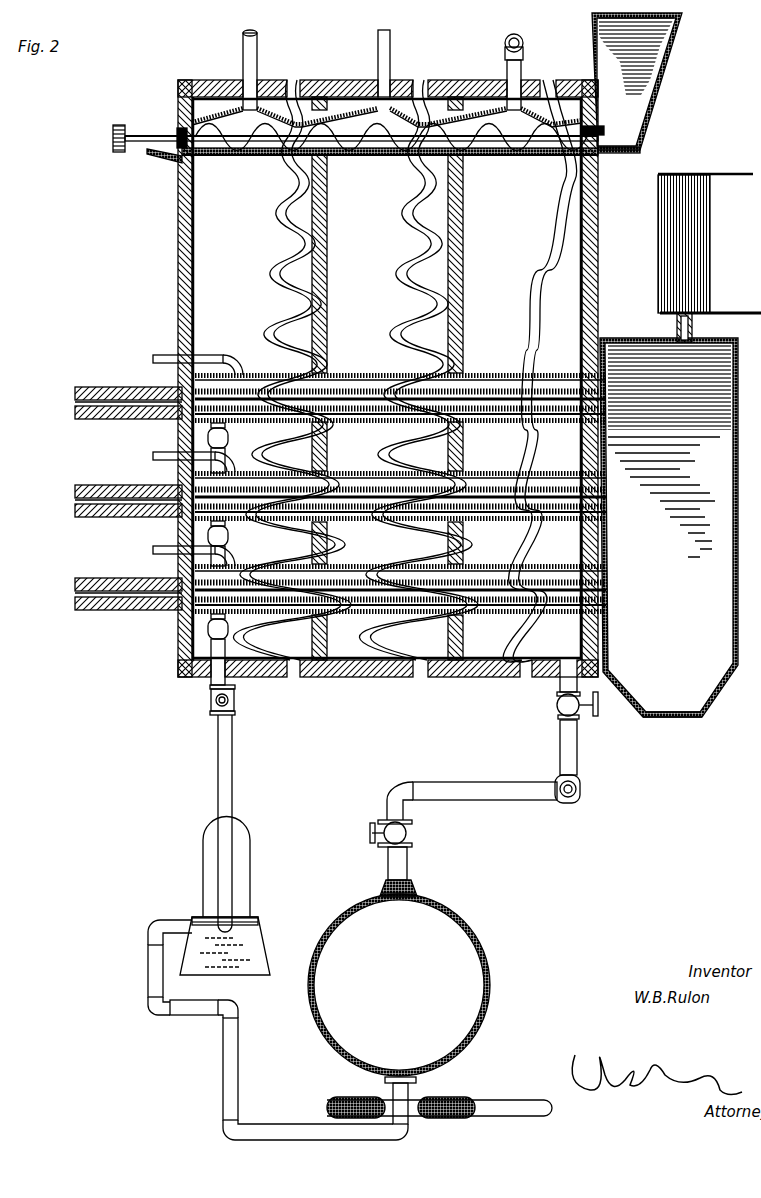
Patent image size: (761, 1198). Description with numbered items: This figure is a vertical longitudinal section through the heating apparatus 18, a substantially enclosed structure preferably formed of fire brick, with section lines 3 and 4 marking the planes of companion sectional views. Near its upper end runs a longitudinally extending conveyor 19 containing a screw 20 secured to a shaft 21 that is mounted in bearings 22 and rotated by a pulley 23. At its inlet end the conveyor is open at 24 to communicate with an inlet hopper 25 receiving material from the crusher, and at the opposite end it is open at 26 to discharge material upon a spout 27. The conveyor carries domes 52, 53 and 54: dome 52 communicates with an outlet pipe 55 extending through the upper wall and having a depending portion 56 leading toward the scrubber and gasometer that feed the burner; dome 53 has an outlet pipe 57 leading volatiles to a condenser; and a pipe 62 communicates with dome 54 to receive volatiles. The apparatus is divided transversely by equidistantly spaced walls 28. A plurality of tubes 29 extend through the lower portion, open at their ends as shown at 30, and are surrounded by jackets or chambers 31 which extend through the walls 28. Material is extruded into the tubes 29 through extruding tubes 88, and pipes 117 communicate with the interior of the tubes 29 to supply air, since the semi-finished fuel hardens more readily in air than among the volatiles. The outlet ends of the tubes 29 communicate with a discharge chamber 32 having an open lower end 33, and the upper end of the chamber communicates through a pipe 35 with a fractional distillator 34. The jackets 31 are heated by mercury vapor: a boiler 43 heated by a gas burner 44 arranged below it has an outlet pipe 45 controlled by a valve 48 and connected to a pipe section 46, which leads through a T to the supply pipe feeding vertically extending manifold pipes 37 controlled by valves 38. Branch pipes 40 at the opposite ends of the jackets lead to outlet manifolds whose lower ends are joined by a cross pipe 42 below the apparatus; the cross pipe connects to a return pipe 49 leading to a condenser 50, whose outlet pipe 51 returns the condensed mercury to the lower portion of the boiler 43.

The section line 3- 3 is at (560, 350).
The section line 4- 4 is at (215, 384).
The heating apparatus 18 is at (458, 79).
The conveyor 19 is at (267, 157).
The screw 20 is at (386, 160).
The shaft 21 is at (523, 145).
The bearings 22 is at (194, 162).
The pulley 23 is at (112, 140).
The conveyor inlet opening 24 is at (598, 131).
The inlet hopper 25 is at (328, 306).
The conveyor outlet opening 26 is at (179, 129).
The spout 27 is at (147, 153).
The transverse walls 28 is at (464, 298).
The tubes 29 is at (233, 357).
The open tube ends 30 is at (182, 390).
The jackets 31 is at (385, 377).
The discharge chamber 32 is at (669, 527).
The open lower end 33 is at (684, 718).
The fractional distillator 34 is at (682, 295).
The pipe 35 is at (677, 332).
The manifold pipes 37 is at (560, 751).
The valves 38 is at (557, 706).
The branch pipes 40 is at (206, 427).
The cross pipe 42 is at (233, 700).
The boiler 43 is at (487, 969).
The gas burner 44 is at (448, 1097).
The outlet pipe 45 is at (401, 881).
The pipe section 46 is at (528, 778).
The valve 48 is at (380, 818).
The return pipe 49 is at (233, 813).
The condenser 50 is at (248, 896).
The outlet pipe 51 is at (150, 973).
The dome 52 is at (527, 115).
The dome 53 is at (413, 90).
The dome 54 is at (240, 106).
The outlet pipe 55 is at (506, 70).
The depending portion 56 is at (520, 42).
The outlet pipe 57 is at (378, 65).
The pipe 62 is at (258, 66).
The extruding tubes 88 is at (112, 422).
The air pipes 117 is at (165, 350).